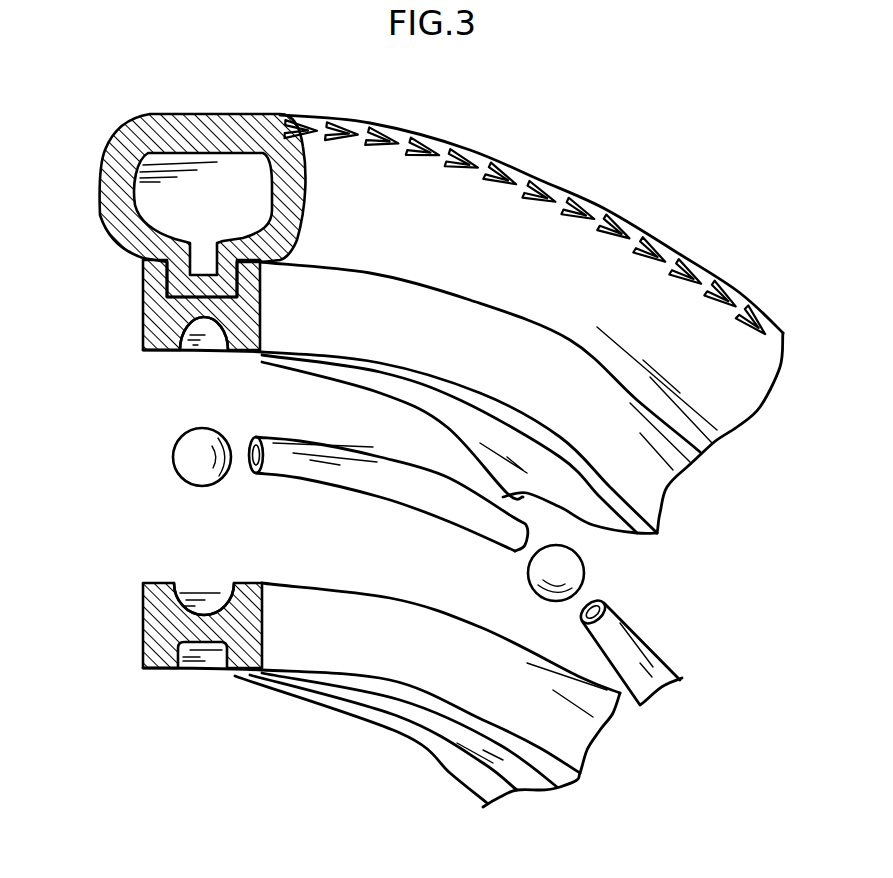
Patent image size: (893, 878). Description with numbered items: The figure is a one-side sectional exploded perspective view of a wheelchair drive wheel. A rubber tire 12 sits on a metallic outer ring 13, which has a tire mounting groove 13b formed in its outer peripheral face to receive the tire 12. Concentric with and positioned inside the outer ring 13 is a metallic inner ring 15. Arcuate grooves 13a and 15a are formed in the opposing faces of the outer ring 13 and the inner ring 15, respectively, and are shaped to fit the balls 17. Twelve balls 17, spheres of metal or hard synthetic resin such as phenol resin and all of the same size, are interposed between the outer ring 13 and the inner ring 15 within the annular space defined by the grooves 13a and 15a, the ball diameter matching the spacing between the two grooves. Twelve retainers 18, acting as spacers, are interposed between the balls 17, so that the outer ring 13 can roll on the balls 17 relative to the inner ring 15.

The tire 12 is at (477, 205).
The outer ring 13 is at (497, 330).
The arcuate groove 13a is at (192, 353).
The tire mounting groove 13b is at (143, 277).
The inner ring 15 is at (580, 728).
The arcuate groove 15a is at (200, 593).
The ball 17 is at (177, 455).
The retainer 18 is at (350, 480).